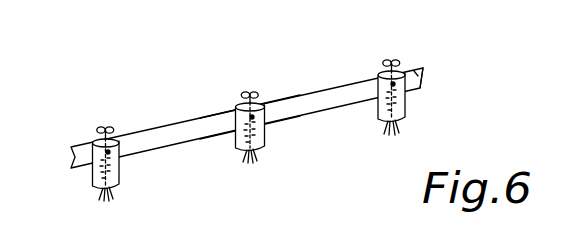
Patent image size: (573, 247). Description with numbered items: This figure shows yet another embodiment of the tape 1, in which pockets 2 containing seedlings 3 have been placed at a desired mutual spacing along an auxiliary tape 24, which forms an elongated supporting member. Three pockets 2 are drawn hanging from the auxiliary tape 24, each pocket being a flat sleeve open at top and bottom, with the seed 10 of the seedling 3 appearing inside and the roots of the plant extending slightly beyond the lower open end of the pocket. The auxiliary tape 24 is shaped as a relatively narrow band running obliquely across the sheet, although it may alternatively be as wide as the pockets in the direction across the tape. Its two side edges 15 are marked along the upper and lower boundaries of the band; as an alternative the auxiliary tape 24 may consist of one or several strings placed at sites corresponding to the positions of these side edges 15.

The tape 1 is at (65, 140).
The pockets 2 is at (119, 170).
The seedlings 3 is at (102, 123).
The seed 10 is at (110, 151).
The side edges 15 is at (314, 90).
The auxiliary tape 24 is at (423, 68).